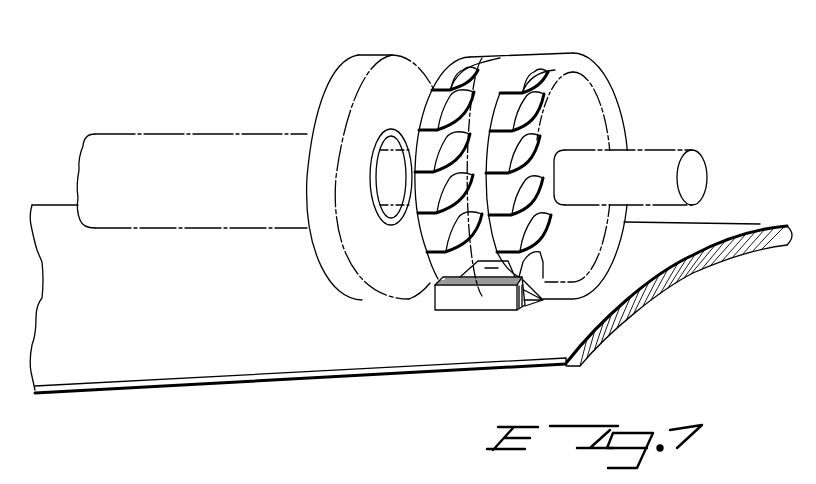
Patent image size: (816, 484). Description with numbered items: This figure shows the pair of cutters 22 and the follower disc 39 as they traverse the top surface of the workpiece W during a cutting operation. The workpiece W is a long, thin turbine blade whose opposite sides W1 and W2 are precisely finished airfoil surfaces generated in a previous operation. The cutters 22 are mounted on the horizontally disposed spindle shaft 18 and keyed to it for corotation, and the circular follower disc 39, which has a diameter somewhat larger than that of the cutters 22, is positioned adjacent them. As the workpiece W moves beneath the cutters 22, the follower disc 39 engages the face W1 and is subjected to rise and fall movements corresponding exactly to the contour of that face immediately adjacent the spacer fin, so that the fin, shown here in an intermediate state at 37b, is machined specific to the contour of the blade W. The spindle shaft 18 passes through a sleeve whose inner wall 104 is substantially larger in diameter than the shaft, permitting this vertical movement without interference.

The inner wall 104 is at (145, 147).
The follower disc 39 is at (360, 55).
The cutters 22 is at (476, 55).
The spindle shaft 18 is at (641, 148).
The support block 37b is at (485, 300).
The workpiece W is at (731, 222).
The face W1 is at (684, 246).
The opposite side W2 is at (687, 274).